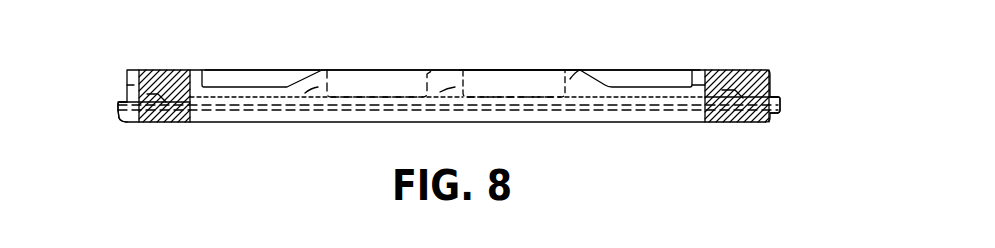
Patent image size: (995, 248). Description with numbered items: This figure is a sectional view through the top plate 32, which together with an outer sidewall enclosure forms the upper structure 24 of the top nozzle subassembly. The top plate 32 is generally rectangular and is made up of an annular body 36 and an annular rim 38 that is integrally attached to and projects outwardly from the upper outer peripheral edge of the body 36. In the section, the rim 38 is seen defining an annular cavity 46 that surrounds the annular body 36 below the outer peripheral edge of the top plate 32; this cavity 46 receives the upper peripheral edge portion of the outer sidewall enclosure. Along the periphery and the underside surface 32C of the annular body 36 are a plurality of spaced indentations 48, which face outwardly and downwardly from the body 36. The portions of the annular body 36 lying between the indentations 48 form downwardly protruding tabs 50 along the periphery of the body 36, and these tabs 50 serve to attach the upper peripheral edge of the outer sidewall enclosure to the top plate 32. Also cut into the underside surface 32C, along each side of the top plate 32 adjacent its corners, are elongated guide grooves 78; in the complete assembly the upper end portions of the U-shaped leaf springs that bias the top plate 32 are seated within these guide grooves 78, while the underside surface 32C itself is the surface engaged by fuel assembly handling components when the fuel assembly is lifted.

The upper structure 24 is at (629, 61).
The top plate 32 is at (562, 60).
The underside surface 32C is at (238, 70).
The annular body 36 is at (413, 71).
The annular rim 38 is at (117, 120).
The annular cavity 46 is at (776, 98).
The indentations 48 is at (380, 97).
The tabs 50 is at (333, 70).
The guide grooves 78 is at (225, 86).